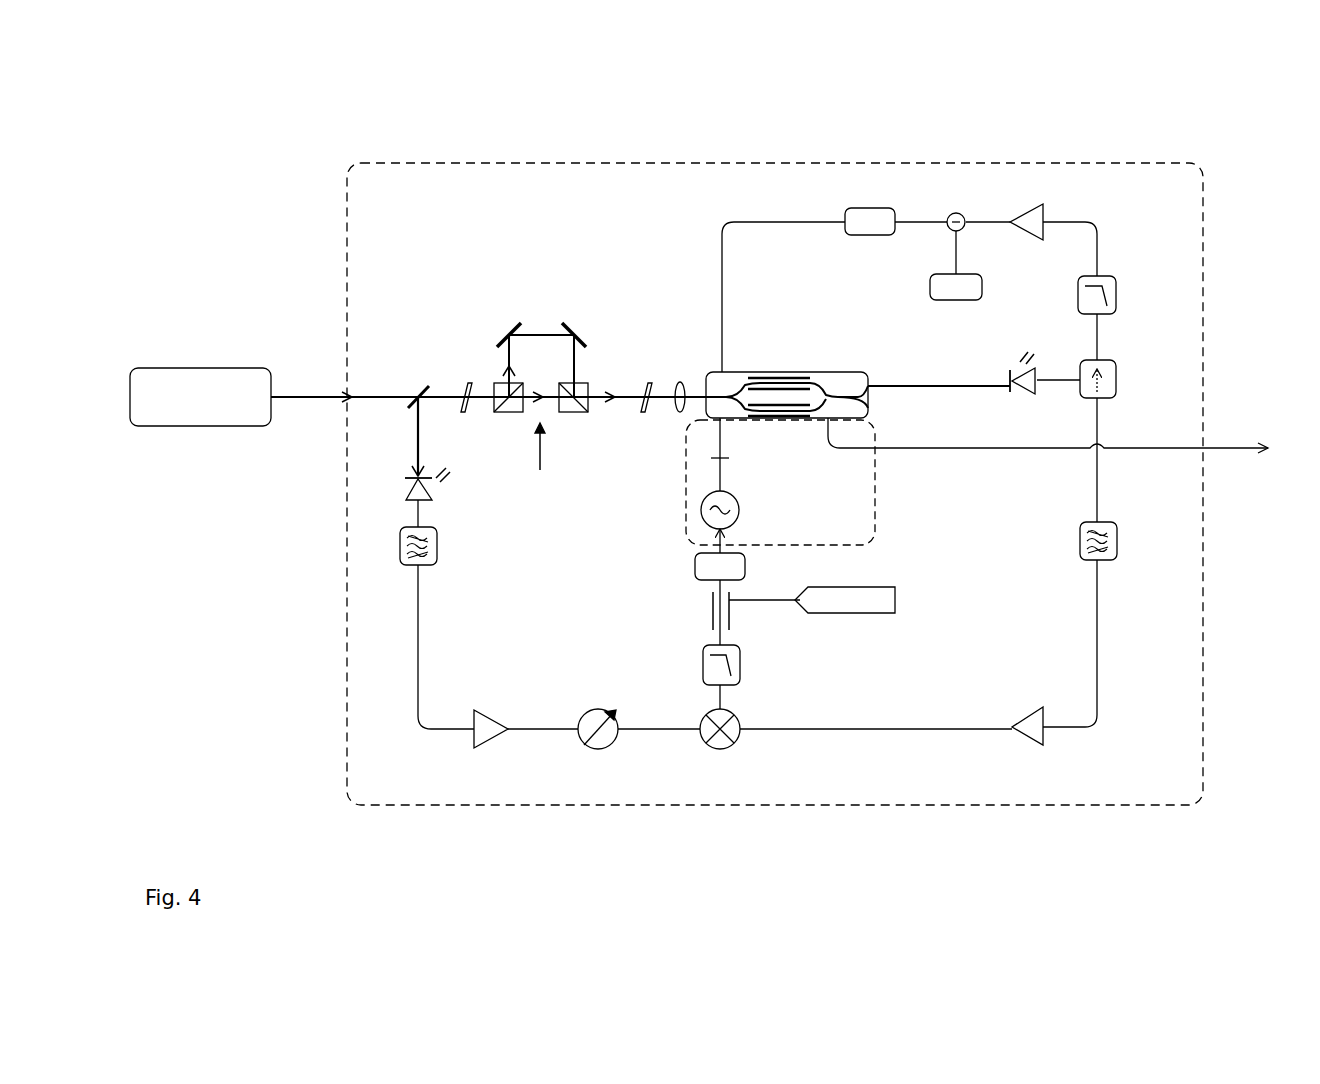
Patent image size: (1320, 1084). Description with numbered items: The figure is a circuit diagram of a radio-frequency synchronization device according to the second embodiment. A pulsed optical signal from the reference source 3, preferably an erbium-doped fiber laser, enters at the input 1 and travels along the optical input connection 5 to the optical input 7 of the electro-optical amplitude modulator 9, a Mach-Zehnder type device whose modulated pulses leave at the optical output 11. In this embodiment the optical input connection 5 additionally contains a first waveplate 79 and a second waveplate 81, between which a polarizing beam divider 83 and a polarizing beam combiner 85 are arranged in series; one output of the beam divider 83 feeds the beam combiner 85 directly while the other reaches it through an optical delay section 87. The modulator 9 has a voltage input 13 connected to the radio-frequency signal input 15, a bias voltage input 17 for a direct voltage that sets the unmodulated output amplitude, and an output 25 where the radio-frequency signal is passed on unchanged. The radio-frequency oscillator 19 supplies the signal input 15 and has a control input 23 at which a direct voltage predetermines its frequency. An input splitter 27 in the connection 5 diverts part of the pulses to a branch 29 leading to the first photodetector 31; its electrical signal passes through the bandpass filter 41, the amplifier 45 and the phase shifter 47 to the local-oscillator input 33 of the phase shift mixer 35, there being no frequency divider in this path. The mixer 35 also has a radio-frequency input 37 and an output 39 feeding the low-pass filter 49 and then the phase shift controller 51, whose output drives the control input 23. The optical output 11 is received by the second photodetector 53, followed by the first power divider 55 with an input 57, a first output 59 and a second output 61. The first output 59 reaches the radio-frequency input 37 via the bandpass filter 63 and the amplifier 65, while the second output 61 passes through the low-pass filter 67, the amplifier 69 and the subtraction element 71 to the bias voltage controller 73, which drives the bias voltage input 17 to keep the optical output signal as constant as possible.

The input 1 is at (350, 392).
The reference source 3 is at (214, 410).
The optical input connection 5 is at (539, 460).
The optical input 7 is at (704, 385).
The electro-optical amplitude modulator 9 is at (810, 370).
The optical output 11 is at (868, 388).
The voltage input 13 is at (714, 424).
The radio-frequency signal input 15 is at (714, 460).
The bias voltage input 17 is at (722, 372).
The radio-frequency oscillator 19 is at (700, 520).
The control input 23 is at (718, 540).
The output 25 is at (828, 422).
The input splitter 27 is at (418, 372).
The branch 29 is at (408, 422).
The first photodetector 31 is at (398, 490).
The local-oscillator input 33 is at (707, 744).
The phase shift mixer 35 is at (740, 742).
The radio-frequency input 37 is at (742, 720).
The output 39 is at (706, 714).
The bandpass filter 41 is at (398, 546).
The amplifier 45 is at (480, 738).
The phase shifter 47 is at (590, 708).
The low-pass filter 49 is at (742, 655).
The phase shift controller 51 is at (748, 567).
The second photodetector 53 is at (1012, 400).
The first power divider 55 is at (1108, 372).
The input 57 is at (1076, 384).
The first output 59 is at (1098, 398).
The second output 61 is at (1100, 360).
The bandpass filter 63 is at (1118, 562).
The amplifier 65 is at (1030, 715).
The low-pass filter 67 is at (1118, 278).
The amplifier 69 is at (1032, 222).
The subtraction element 71 is at (967, 228).
The bias voltage controller 73 is at (868, 206).
The first waveplate 79 is at (465, 380).
The second waveplate 81 is at (645, 380).
The polarizing beam divider 83 is at (509, 432).
The polarizing beam combiner 85 is at (574, 432).
The optical delay section 87 is at (542, 332).